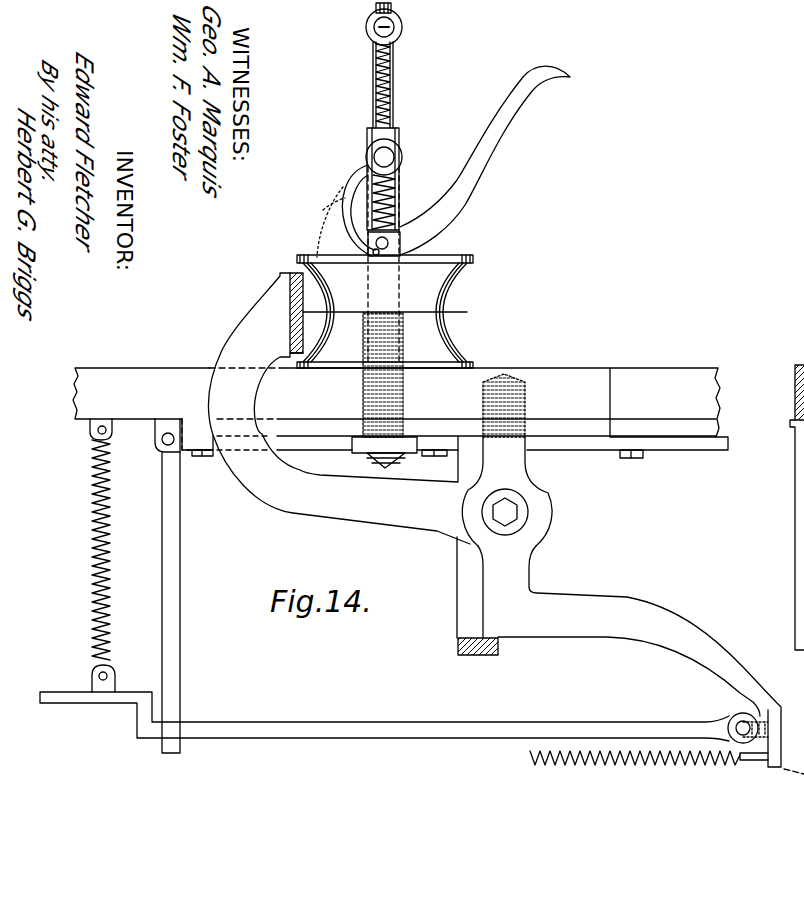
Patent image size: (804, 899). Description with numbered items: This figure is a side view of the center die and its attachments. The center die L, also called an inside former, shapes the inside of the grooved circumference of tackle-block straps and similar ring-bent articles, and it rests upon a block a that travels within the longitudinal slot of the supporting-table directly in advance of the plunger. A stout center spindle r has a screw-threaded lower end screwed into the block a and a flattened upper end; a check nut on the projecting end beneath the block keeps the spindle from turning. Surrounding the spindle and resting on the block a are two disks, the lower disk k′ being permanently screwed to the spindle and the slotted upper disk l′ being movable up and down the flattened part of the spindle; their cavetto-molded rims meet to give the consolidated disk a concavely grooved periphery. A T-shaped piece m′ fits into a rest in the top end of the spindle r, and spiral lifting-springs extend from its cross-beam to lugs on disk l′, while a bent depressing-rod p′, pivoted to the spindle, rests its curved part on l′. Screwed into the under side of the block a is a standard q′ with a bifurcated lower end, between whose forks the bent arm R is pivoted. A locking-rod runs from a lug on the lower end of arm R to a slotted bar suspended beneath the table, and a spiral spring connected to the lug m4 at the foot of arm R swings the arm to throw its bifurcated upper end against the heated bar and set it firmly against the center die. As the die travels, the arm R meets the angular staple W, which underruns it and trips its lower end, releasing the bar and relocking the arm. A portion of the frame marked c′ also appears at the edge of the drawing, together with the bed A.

The block a is at (396, 402).
The machine bed A is at (396, 402).
The lug m4 is at (197, 434).
The center die L is at (456, 276).
The upper disk l′ is at (445, 270).
The lower disk k′ is at (335, 320).
The center spindle r is at (388, 307).
The T-shaped piece m′ is at (394, 129).
The bent depressing-rod p′ is at (485, 160).
The bent arm R is at (380, 409).
The standard q′ is at (528, 462).
The angular staple W is at (617, 655).
The frame part c′ is at (794, 445).